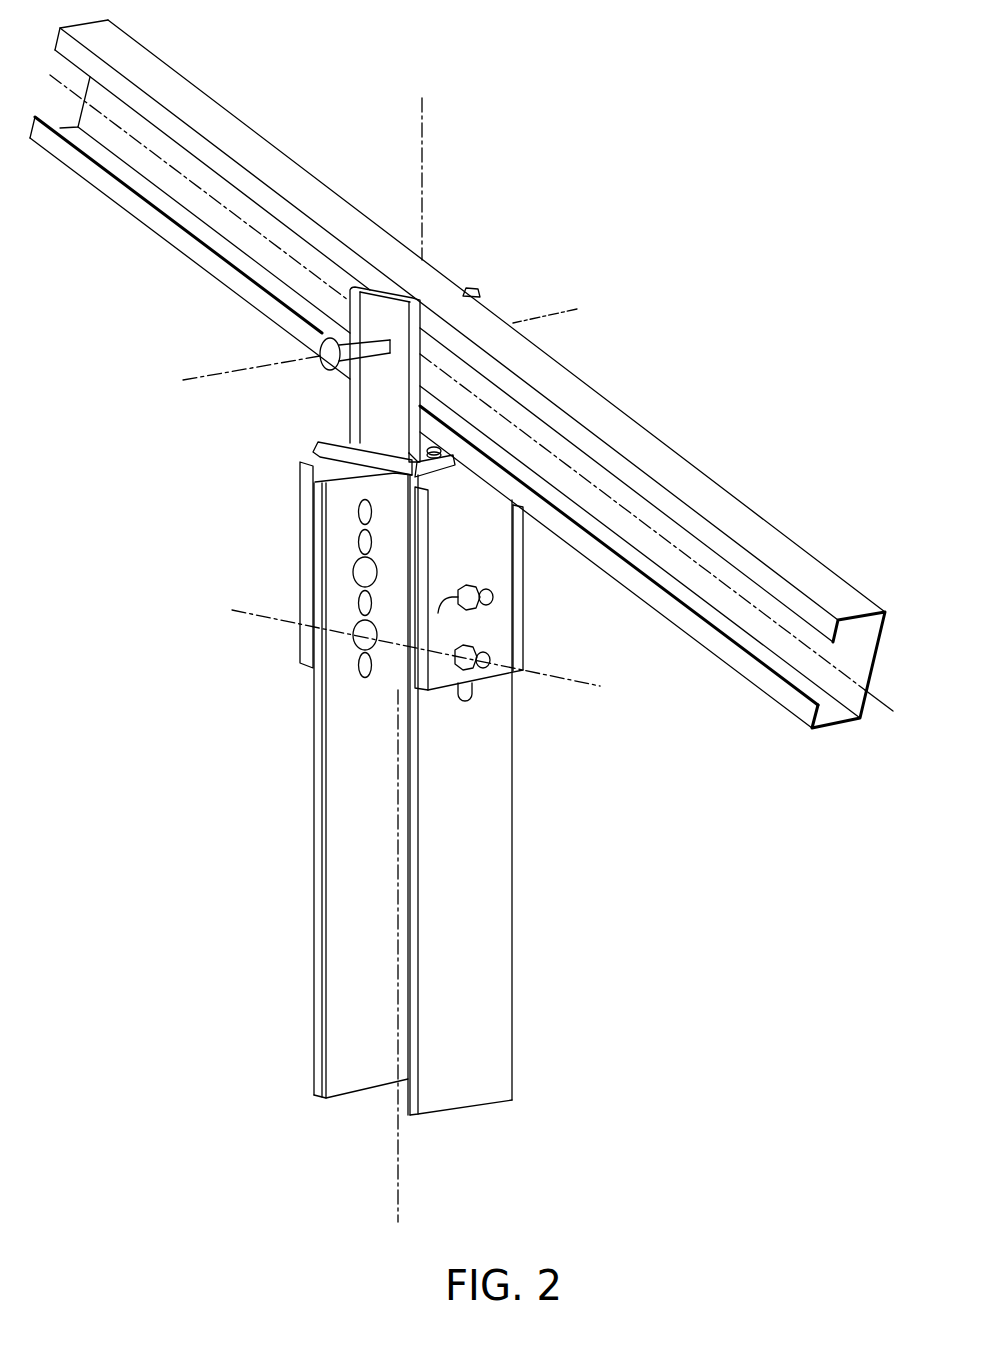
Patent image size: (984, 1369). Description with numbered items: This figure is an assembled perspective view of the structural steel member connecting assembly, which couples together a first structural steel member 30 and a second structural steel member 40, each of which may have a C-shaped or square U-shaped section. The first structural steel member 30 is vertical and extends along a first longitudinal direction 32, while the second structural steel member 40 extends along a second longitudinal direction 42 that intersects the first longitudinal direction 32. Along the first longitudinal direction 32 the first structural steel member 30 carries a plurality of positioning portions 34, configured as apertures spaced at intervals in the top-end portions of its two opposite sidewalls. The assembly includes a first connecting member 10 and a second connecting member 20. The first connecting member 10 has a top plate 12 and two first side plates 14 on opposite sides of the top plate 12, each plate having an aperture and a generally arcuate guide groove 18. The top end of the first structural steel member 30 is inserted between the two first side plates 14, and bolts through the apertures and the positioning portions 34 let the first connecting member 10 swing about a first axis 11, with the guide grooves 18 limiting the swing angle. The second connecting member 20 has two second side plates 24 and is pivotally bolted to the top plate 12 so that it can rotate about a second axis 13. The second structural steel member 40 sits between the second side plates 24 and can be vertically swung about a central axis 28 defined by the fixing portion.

The first connecting member 10 is at (268, 656).
The first axis 11 is at (250, 611).
The top plate 12 is at (318, 442).
The second axis 13 is at (422, 130).
The first side plates 14 is at (300, 545).
The guide groove 18 is at (443, 625).
The second connecting member 20 is at (266, 343).
The second side plates 24 is at (417, 320).
The central axis 28 is at (562, 309).
The first structural steel member 30 is at (515, 1048).
The first longitudinal direction 32 is at (398, 1153).
The positioning portions 34 is at (363, 678).
The second structural steel member 40 is at (805, 547).
The second longitudinal direction 42 is at (888, 712).